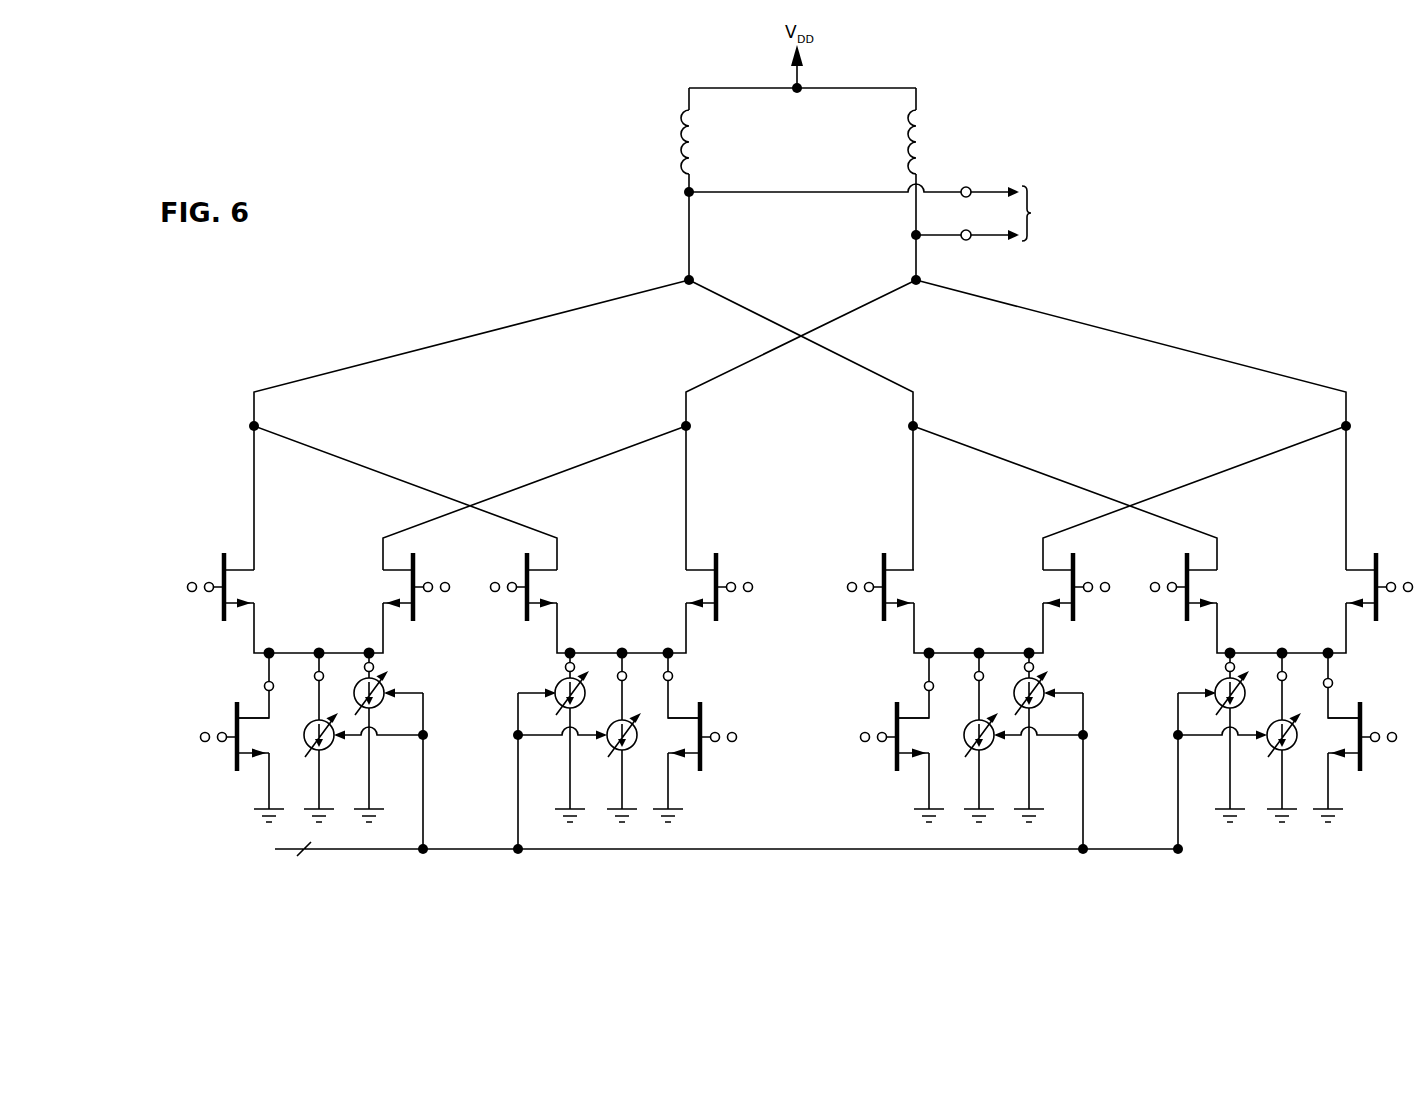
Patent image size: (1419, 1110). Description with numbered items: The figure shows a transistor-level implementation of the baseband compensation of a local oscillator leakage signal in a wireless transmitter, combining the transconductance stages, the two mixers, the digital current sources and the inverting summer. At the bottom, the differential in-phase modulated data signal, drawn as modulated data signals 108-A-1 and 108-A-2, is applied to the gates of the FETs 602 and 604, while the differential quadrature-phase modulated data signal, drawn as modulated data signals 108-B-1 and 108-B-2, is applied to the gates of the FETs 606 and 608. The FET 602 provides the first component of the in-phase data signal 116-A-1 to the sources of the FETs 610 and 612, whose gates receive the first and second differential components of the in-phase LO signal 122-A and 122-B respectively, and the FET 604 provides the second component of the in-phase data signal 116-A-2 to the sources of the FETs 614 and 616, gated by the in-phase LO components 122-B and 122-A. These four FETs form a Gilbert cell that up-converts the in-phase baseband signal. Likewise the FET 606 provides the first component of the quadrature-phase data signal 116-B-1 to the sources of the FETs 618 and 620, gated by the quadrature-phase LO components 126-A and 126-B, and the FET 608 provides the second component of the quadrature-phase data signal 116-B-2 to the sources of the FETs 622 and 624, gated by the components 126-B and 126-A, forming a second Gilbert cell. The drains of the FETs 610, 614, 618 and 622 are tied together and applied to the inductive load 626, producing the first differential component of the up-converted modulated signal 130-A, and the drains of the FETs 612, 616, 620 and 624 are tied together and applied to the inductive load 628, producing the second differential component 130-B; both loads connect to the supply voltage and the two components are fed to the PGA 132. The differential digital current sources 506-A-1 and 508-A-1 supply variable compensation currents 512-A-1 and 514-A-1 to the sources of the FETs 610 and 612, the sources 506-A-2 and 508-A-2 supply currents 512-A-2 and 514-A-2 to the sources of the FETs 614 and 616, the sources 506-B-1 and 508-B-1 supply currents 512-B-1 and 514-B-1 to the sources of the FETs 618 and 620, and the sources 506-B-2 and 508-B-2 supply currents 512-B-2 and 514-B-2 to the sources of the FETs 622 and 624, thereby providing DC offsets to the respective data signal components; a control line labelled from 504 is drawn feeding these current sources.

The inductive load 626 is at (680, 137).
The inductive load 628 is at (930, 140).
The first differential component of the up-converted modulated signal 130-A is at (966, 187).
The second differential component of the up-converted modulated signal 130-B is at (966, 240).
The PGA 132 is at (1076, 213).
The FET 610 is at (222, 558).
The FET 612 is at (414, 560).
The FET 614 is at (526, 559).
The FET 616 is at (717, 560).
The FET 618 is at (883, 559).
The FET 620 is at (1074, 560).
The FET 622 is at (1186, 559).
The FET 624 is at (1377, 560).
The first differential component of the in-phase LO signal 122-A is at (193, 592).
The second differential component of the in-phase LO signal 122-B is at (429, 592).
The first differential component of the quadrature-phase LO signal 126-A is at (853, 592).
The second differential component of the quadrature-phase LO signal 126-B is at (1089, 592).
The FET 602 is at (236, 708).
The FET 604 is at (720, 700).
The FET 606 is at (896, 708).
The FET 608 is at (1381, 708).
The modulated data signal 108-A-1 is at (206, 742).
The modulated data signal 108-A-2 is at (732, 742).
The modulated data signal 108-B-1 is at (866, 742).
The modulated data signal 108-B-2 is at (1392, 742).
The first component of the in-phase data signal 116-A-1 is at (266, 687).
The second component of the in-phase data signal 116-A-2 is at (672, 676).
The first component of the quadrature-phase data signal 116-B-1 is at (926, 687).
The second component of the quadrature-phase data signal 116-B-2 is at (1332, 683).
The variable compensation current 512-A-1 is at (318, 672).
The variable compensation current 512-A-2 is at (624, 672).
The variable compensation current 512-B-1 is at (978, 672).
The variable compensation current 512-B-2 is at (1284, 672).
The variable compensation current 514-A-1 is at (372, 666).
The variable compensation current 514-A-2 is at (566, 667).
The variable compensation current 514-B-1 is at (1032, 666).
The variable compensation current 514-B-2 is at (1226, 667).
The differential digital current source 506-A-1 is at (310, 750).
The differential digital current source 506-A-2 is at (633, 750).
The differential digital current source 506-B-1 is at (970, 750).
The differential digital current source 506-B-2 is at (1312, 748).
The differential digital current source 508-A-1 is at (373, 707).
The differential digital current source 508-A-2 is at (566, 712).
The differential digital current source 508-B-1 is at (1033, 707).
The differential digital current source 508-B-2 is at (1216, 690).
The control signal line 504 is at (707, 851).